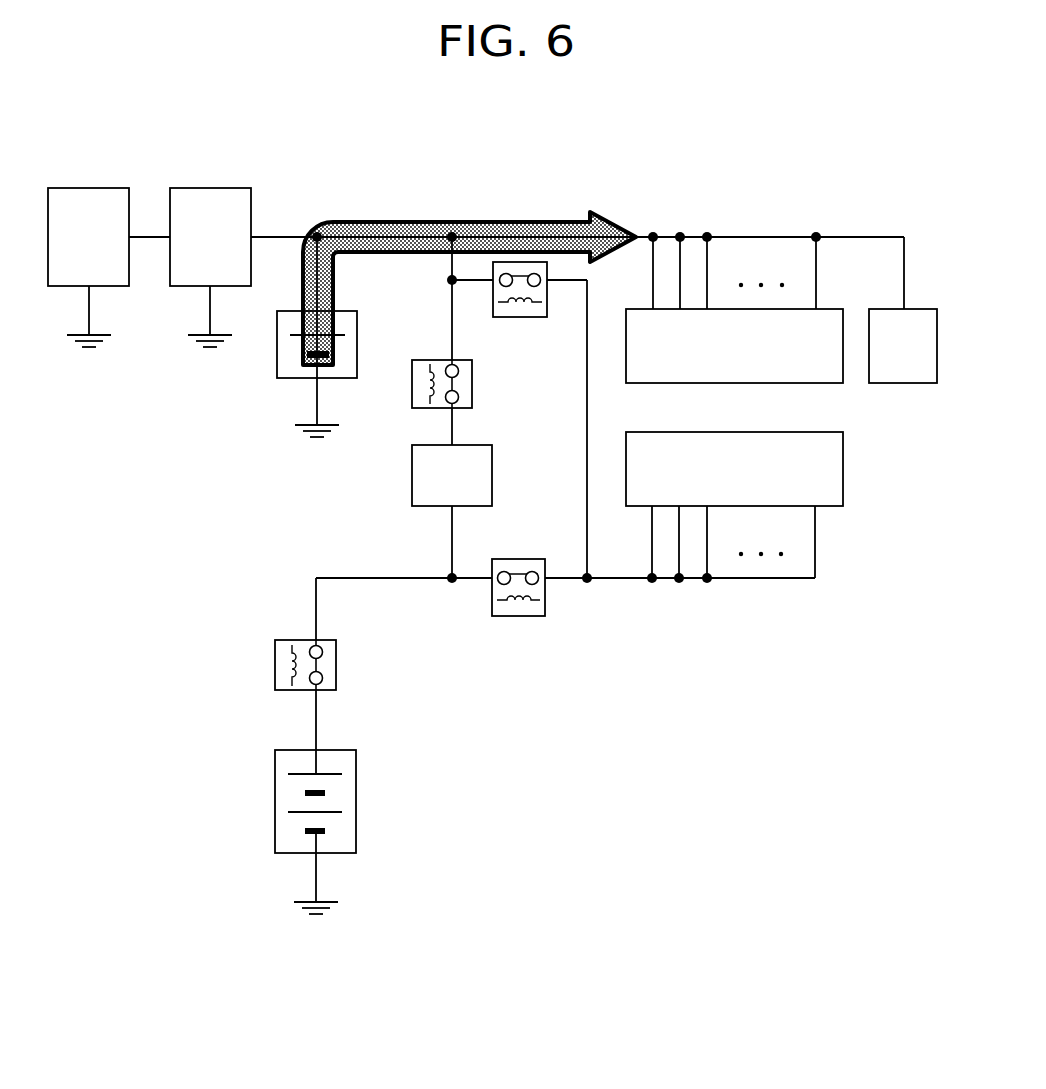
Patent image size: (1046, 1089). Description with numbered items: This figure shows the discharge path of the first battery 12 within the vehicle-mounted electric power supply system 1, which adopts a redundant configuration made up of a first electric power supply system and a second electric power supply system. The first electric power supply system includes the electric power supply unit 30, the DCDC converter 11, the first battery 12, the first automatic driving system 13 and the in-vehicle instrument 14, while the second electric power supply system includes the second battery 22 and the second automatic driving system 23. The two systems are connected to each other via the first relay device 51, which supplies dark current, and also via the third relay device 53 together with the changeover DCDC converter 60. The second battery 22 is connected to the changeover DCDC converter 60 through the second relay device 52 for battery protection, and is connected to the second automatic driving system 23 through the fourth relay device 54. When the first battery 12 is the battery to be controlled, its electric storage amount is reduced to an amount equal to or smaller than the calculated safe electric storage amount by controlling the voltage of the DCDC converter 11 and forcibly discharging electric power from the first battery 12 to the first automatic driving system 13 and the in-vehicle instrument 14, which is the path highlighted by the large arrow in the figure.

The electric power supply system 1 is at (800, 148).
The electric power supply unit 30 is at (110, 188).
The DCDC converter 11 is at (231, 188).
The first battery 12 is at (357, 333).
The first automatic driving system 13 is at (840, 309).
The in-vehicle instrument 14 is at (905, 309).
The second automatic driving system 23 is at (843, 460).
The second battery 22 is at (356, 786).
The first relay device 51 is at (526, 317).
The second relay device 52 is at (336, 665).
The third relay device 53 is at (472, 385).
The fourth relay device 54 is at (520, 559).
The changeover DCDC converter 60 is at (492, 470).